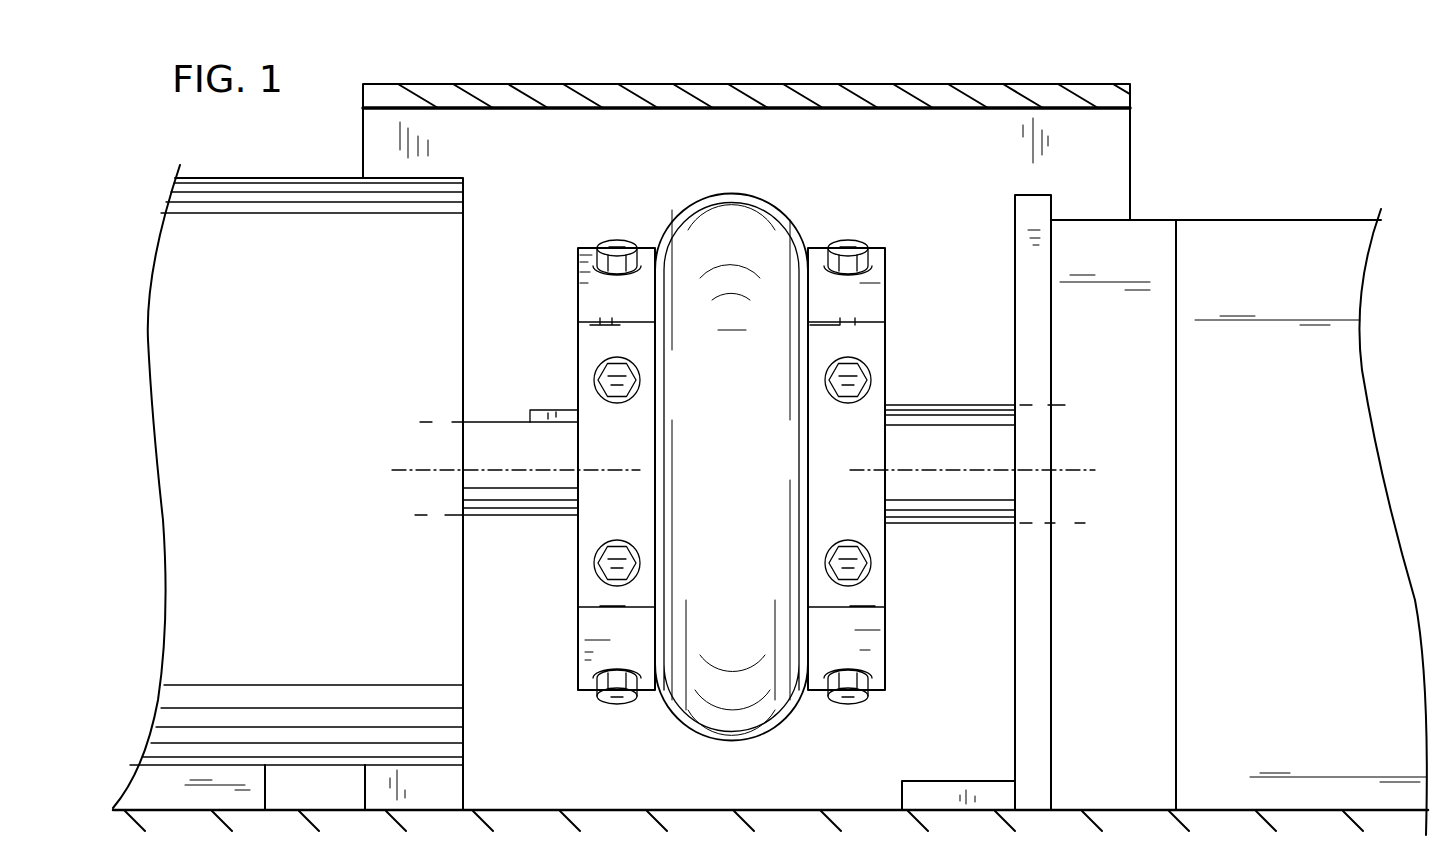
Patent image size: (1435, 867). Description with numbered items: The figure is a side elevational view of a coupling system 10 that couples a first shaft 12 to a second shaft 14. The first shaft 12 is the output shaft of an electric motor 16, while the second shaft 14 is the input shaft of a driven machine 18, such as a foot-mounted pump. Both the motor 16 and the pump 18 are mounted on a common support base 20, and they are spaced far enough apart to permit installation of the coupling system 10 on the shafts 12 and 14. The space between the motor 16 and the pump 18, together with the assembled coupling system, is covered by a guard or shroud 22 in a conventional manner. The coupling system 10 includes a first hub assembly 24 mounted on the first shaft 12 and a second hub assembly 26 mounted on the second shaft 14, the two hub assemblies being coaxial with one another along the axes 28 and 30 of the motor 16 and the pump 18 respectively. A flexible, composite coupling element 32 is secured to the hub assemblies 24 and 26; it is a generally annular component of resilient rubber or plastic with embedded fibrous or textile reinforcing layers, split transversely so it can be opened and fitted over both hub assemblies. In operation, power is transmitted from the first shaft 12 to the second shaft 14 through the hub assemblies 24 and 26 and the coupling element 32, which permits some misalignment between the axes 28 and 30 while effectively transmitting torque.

The coupling system 10 is at (733, 459).
The first shaft 12 is at (522, 508).
The second shaft 14 is at (937, 508).
The electric motor 16 is at (262, 471).
The driven machine 18 is at (1260, 496).
The support base 20 is at (717, 854).
The guard or shroud 22 is at (712, 84).
The first hub assembly 24 is at (569, 268).
The second hub assembly 26 is at (905, 277).
The axis of motor 28 is at (425, 470).
The axis of pump 30 is at (1066, 470).
The flexible composite coupling element 32 is at (748, 193).